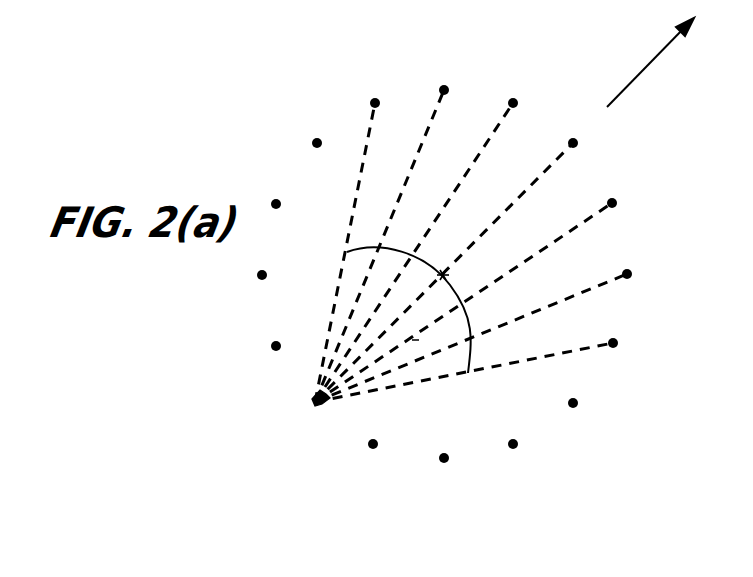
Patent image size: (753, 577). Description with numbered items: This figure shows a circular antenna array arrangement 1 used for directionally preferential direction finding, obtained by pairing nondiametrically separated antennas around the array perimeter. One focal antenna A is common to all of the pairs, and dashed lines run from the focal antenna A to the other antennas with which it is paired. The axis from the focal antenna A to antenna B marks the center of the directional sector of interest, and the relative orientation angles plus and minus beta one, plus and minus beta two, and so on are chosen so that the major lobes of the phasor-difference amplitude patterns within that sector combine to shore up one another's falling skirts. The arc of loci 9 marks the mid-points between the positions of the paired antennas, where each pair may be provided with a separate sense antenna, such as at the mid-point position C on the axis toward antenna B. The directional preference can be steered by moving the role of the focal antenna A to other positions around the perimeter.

The array arrangement example 1 is at (598, 322).
The loci 9 is at (525, 313).
The focal antenna A is at (312, 412).
The antenna B is at (583, 135).
The mid-point sense antenna position C is at (453, 277).